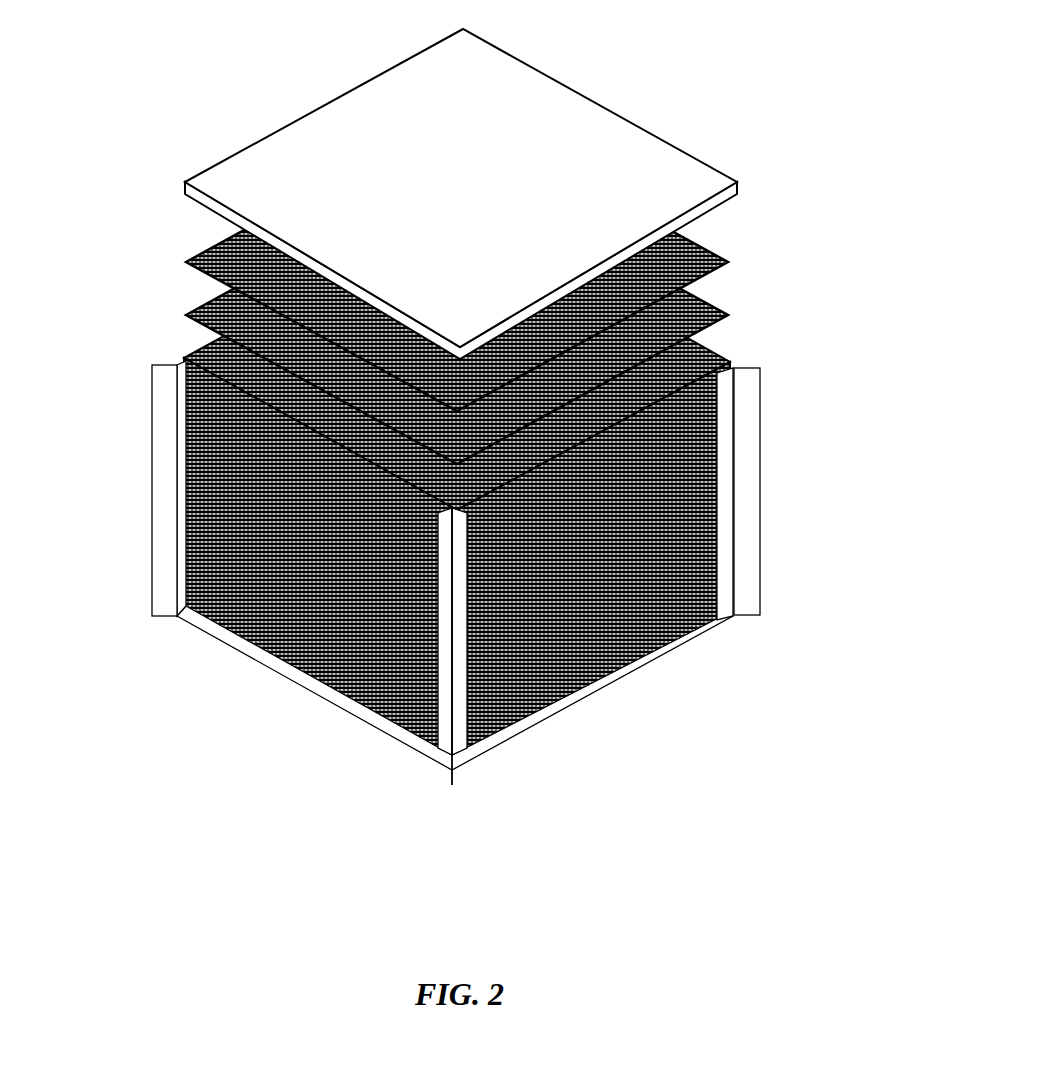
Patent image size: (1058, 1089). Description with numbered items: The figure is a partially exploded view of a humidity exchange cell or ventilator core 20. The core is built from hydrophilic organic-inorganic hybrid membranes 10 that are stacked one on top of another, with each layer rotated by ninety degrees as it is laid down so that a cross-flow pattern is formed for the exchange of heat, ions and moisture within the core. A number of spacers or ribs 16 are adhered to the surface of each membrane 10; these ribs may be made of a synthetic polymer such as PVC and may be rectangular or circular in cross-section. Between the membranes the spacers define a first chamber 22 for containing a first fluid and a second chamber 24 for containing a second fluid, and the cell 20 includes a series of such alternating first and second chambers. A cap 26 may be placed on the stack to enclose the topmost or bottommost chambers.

The ventilator core 20 is at (134, 68).
The cap 26 is at (574, 130).
The spacers or ribs 16 is at (192, 260).
The hydrophilic organic-inorganic hybrid membrane 10 is at (688, 245).
The first chamber 22 is at (192, 285).
The second chamber 24 is at (749, 348).